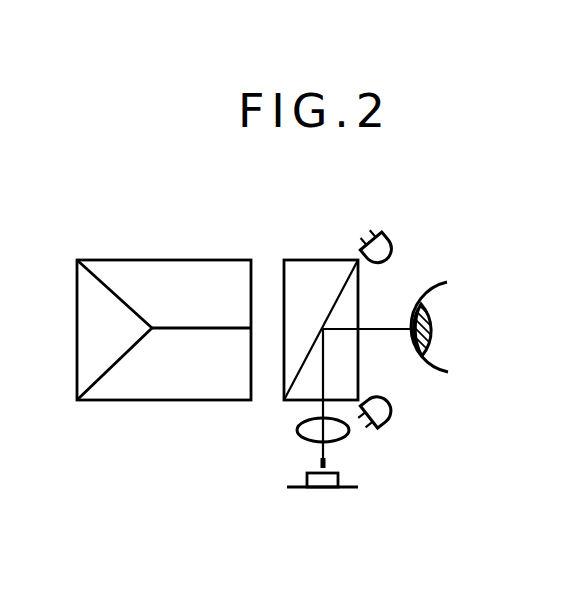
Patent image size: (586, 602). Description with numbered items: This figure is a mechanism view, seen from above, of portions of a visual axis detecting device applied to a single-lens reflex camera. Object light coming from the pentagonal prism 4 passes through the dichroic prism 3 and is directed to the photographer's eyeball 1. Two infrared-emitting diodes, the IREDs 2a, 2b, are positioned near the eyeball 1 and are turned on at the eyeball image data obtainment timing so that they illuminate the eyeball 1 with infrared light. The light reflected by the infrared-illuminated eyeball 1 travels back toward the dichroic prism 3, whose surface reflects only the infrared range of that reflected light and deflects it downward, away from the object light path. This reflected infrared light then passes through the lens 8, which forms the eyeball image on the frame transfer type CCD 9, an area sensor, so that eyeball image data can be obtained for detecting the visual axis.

The eyeball 1 is at (447, 297).
The IRED 2a is at (396, 420).
The IRED 2b is at (397, 239).
The dichroic prism 3 is at (307, 260).
The pentagonal prism 4 is at (193, 260).
The lens 8 is at (303, 437).
The FT type CCD area sensor 9 is at (307, 478).